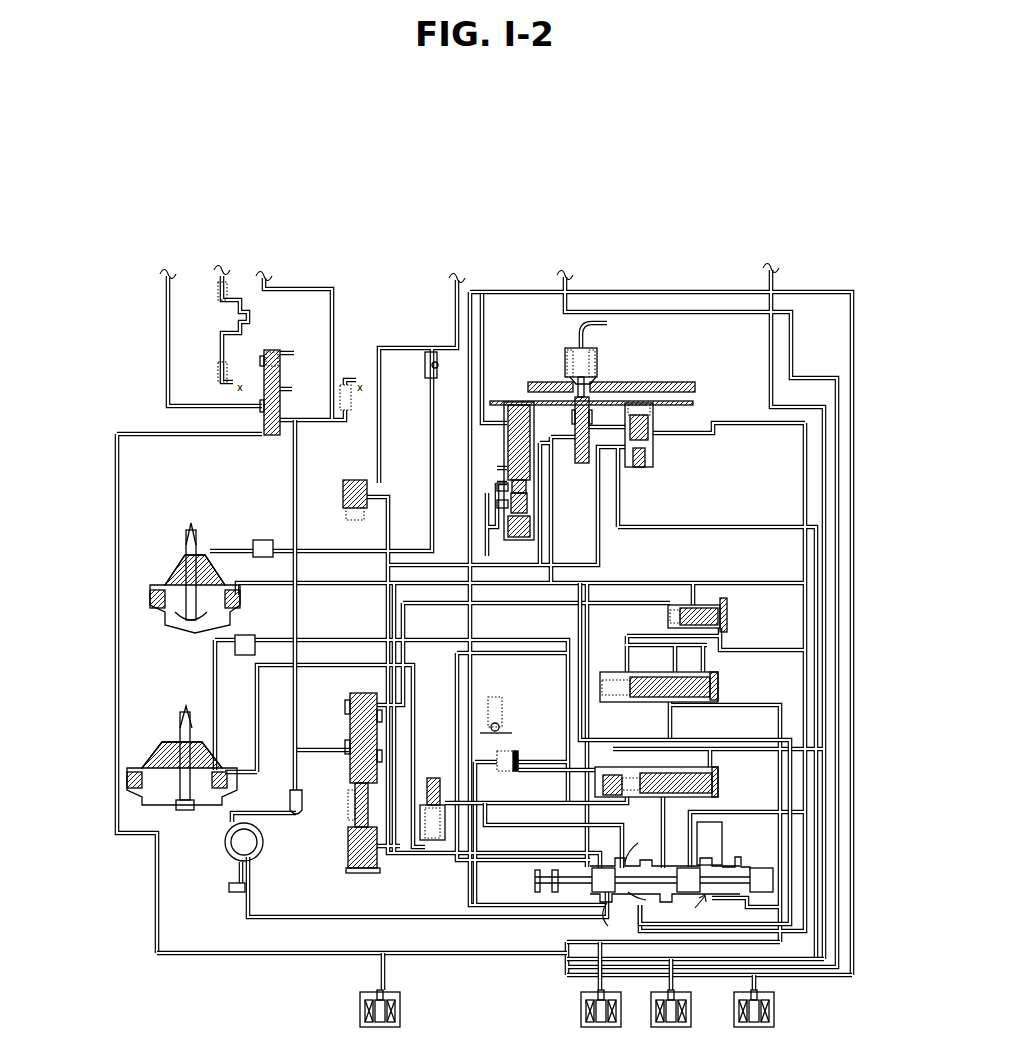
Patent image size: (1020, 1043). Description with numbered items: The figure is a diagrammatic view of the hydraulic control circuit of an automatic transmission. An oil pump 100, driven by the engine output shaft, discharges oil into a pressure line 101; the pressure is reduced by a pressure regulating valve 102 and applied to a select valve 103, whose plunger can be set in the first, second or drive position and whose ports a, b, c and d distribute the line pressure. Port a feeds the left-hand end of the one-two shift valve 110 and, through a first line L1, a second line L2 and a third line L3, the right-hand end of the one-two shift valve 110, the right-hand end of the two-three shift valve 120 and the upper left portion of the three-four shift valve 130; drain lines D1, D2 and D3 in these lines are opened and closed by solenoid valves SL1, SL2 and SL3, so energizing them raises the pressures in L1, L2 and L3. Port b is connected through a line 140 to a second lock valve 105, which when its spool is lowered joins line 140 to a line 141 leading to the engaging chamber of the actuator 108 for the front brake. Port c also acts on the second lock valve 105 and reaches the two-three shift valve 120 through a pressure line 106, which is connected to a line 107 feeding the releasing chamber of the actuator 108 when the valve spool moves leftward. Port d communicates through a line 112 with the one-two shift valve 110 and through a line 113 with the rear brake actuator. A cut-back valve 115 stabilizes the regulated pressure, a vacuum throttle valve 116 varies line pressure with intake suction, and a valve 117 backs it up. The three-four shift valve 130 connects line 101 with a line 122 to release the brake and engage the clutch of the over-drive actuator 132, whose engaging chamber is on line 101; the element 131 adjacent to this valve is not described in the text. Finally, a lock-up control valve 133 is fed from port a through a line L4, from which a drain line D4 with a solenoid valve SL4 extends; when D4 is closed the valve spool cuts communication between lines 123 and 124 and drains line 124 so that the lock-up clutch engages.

The oil pump 100 is at (236, 848).
The pressure line 101 is at (438, 564).
The pressure regulating valve 102 is at (345, 838).
The select valve 103 is at (592, 867).
The second lock valve 105 is at (436, 772).
The pressure line 106 is at (532, 772).
The line 107 is at (570, 795).
The actuator 108 is at (172, 798).
The 1-2 shift valve 110 is at (648, 703).
The line 112 is at (787, 843).
The line 113 is at (673, 734).
The cut-back valve 115 is at (714, 597).
The vacuum throttle valve 116 is at (583, 417).
The valve 117 is at (653, 424).
The 2-3 shift valve 120 is at (664, 768).
The line 122 is at (440, 462).
The line 123 is at (318, 515).
The line 124 is at (168, 365).
The 3-4 shift valve 130 is at (506, 395).
The valve spool 131 is at (527, 467).
The actuator 132 is at (168, 626).
The lock-up control valve 133 is at (288, 343).
The line 140 is at (499, 812).
The line 141 is at (413, 713).
The port a is at (644, 898).
The port b is at (639, 841).
The port c is at (613, 921).
The port d is at (694, 910).
The first line L1 is at (768, 946).
The second line L2 is at (823, 972).
The third line L3 is at (852, 978).
The line L4 is at (197, 957).
The first drain line D1 is at (597, 985).
The second drain line D2 is at (675, 985).
The third drain line D3 is at (757, 985).
The drain line D4 is at (385, 967).
The first solenoid valve SL1 is at (582, 1010).
The second solenoid valve SL2 is at (691, 1010).
The third solenoid valve SL3 is at (773, 1010).
The solenoid valve SL4 is at (400, 1009).